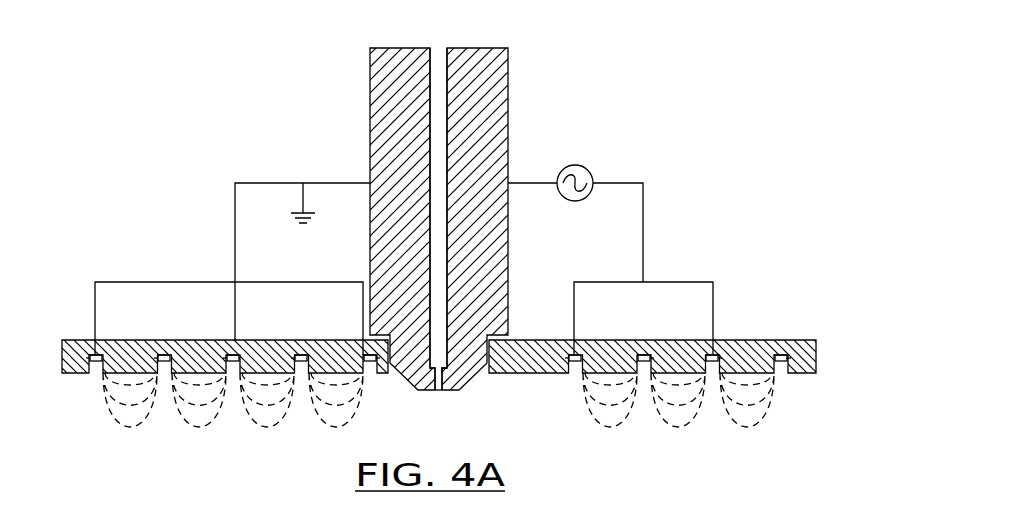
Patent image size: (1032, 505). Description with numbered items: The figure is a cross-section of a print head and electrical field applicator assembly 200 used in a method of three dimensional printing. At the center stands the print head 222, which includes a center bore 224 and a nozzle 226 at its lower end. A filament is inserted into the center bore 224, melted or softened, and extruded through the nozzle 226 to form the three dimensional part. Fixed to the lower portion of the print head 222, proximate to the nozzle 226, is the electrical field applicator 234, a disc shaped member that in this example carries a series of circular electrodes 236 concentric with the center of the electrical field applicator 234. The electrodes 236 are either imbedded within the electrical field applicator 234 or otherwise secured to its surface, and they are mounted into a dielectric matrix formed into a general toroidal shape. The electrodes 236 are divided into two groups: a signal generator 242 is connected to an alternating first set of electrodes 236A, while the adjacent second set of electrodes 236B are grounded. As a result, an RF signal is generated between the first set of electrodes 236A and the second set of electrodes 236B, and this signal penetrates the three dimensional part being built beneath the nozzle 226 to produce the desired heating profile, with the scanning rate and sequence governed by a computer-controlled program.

The print head and electrical field applicator assembly 200 is at (708, 71).
The print head 222 is at (508, 93).
The center bore 224 is at (440, 62).
The nozzle 226 is at (438, 392).
The electrical field applicator 234 is at (816, 355).
The circular electrodes 236 is at (89, 374).
The first set of electrodes 236A is at (568, 352).
The second set of electrodes 236B is at (92, 352).
The signal generator 242 is at (573, 165).